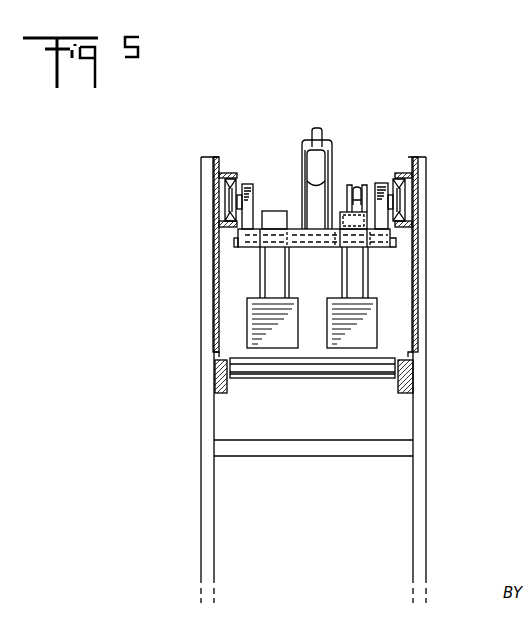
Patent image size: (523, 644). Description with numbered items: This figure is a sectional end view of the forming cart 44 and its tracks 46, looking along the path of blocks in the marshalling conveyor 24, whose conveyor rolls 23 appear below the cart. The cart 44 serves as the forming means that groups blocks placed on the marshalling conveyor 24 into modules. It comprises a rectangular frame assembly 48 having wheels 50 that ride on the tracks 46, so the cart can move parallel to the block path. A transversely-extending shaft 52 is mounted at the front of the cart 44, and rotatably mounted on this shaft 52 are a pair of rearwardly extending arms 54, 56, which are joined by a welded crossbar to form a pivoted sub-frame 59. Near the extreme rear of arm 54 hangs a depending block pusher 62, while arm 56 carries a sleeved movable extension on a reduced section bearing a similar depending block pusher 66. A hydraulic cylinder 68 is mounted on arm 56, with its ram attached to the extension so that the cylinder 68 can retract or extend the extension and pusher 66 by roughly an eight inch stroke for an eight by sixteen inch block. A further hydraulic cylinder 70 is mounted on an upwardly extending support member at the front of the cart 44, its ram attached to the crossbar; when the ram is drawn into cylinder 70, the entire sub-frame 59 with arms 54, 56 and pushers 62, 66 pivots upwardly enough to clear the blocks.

The conveyor rolls 23 is at (303, 366).
The marshalling conveyor 24 is at (281, 387).
The forming cart 44 is at (358, 133).
The tracks 46 is at (226, 221).
The rectangular frame assembly 48 is at (300, 247).
The wheels 50 is at (238, 182).
The transversely-extending shaft 52 is at (396, 245).
The arm 54 is at (272, 211).
The arm 56 is at (347, 212).
The pivoted sub-frame 59 is at (257, 270).
The block pusher 62 is at (292, 308).
The block pusher 66 is at (372, 309).
The hydraulic cylinder 68 is at (360, 186).
The hydraulic cylinder 70 is at (303, 165).